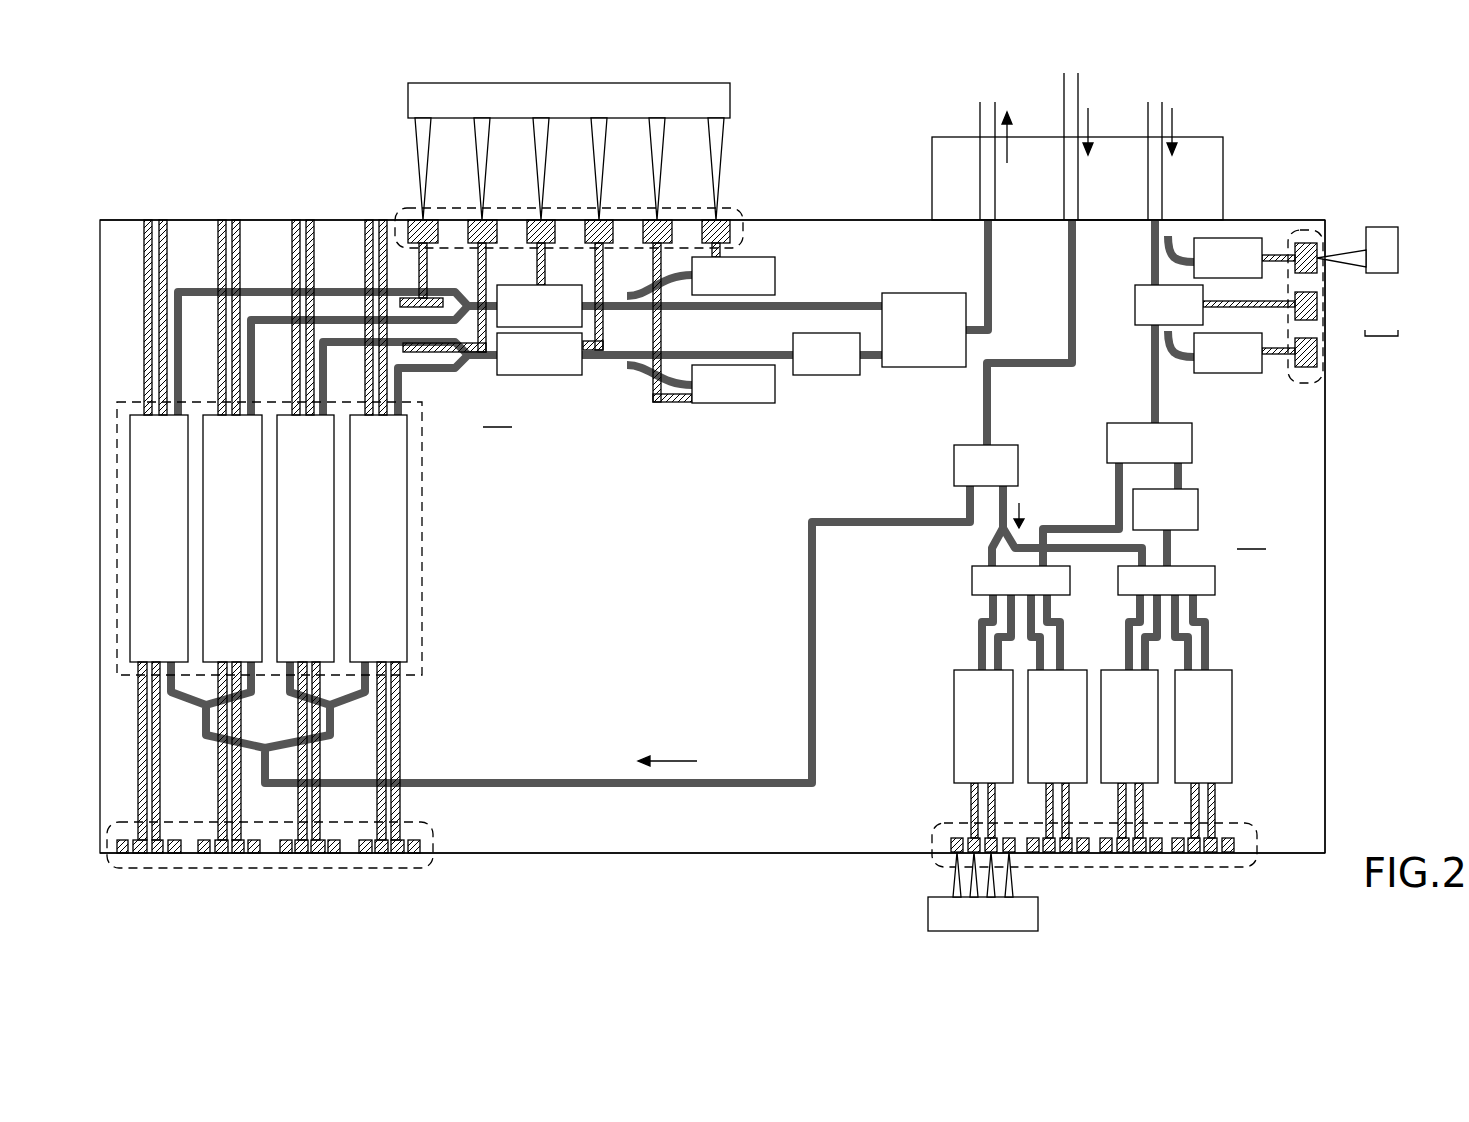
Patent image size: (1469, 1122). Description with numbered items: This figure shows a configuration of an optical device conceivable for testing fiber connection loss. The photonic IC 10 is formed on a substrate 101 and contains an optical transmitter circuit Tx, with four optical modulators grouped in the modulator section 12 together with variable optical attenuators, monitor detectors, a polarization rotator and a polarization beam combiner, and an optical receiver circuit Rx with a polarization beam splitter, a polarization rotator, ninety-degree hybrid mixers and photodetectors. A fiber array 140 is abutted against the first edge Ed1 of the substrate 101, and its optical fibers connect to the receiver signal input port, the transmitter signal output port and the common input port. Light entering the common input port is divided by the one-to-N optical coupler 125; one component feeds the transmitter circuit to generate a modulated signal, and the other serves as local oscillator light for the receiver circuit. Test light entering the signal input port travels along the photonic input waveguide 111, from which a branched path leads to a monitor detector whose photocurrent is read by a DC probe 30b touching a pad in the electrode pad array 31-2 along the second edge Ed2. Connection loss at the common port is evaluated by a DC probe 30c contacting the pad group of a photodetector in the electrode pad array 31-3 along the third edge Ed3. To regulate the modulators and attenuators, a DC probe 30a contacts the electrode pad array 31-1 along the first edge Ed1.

The photonic IC 10 is at (155, 67).
The substrate 101 is at (1260, 219).
The modulator section 12 is at (423, 500).
The DC probe 30a is at (662, 84).
The DC probe 30b is at (1382, 227).
The DC probe 30c is at (928, 915).
The electrode pad array 31-1 is at (742, 212).
The electrode pad array 31-2 is at (1305, 230).
The electrode pad array 31-3 is at (1090, 867).
The photonic input waveguide 111 is at (1160, 397).
The 1:N optical coupler 125 is at (954, 466).
The fiber array 140 is at (945, 137).
The first edge Ed1 is at (332, 220).
The second edge Ed2 is at (1325, 567).
The third edge Ed3 is at (540, 853).